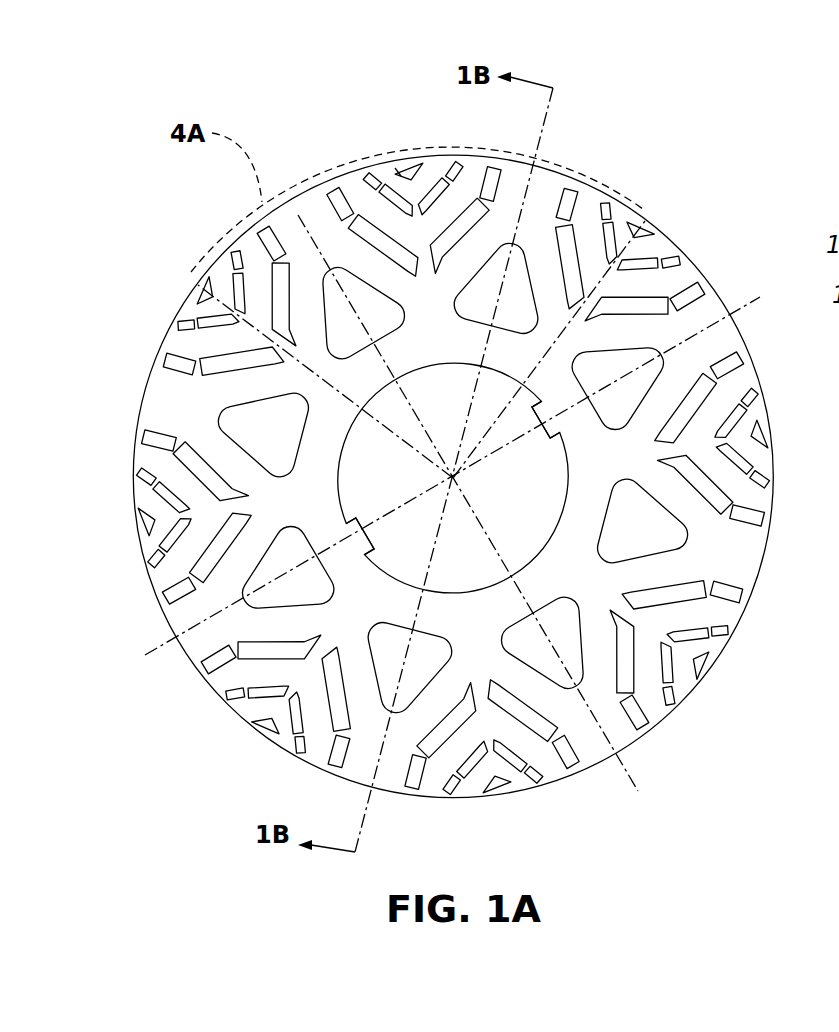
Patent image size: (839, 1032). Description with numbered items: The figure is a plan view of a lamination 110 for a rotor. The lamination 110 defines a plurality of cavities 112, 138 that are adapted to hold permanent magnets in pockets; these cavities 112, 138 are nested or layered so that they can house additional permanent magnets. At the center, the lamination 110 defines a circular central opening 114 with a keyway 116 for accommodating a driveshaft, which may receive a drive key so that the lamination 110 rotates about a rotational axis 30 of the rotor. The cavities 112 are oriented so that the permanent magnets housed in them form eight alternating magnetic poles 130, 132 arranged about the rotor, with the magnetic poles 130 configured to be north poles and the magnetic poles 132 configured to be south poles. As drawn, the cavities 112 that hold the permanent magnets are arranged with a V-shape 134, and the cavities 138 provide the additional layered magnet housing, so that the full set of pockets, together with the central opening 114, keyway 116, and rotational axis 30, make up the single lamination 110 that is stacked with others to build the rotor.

The lamination 110 is at (372, 75).
The cavities 112 is at (197, 337).
The circular central opening 114 is at (508, 378).
The keyway 116 is at (532, 410).
The magnetic poles 130 is at (408, 150).
The magnetic poles 132 is at (657, 208).
The V-shape 134 is at (292, 190).
The cavities 138 is at (397, 170).
The rotational axis 30 is at (445, 479).